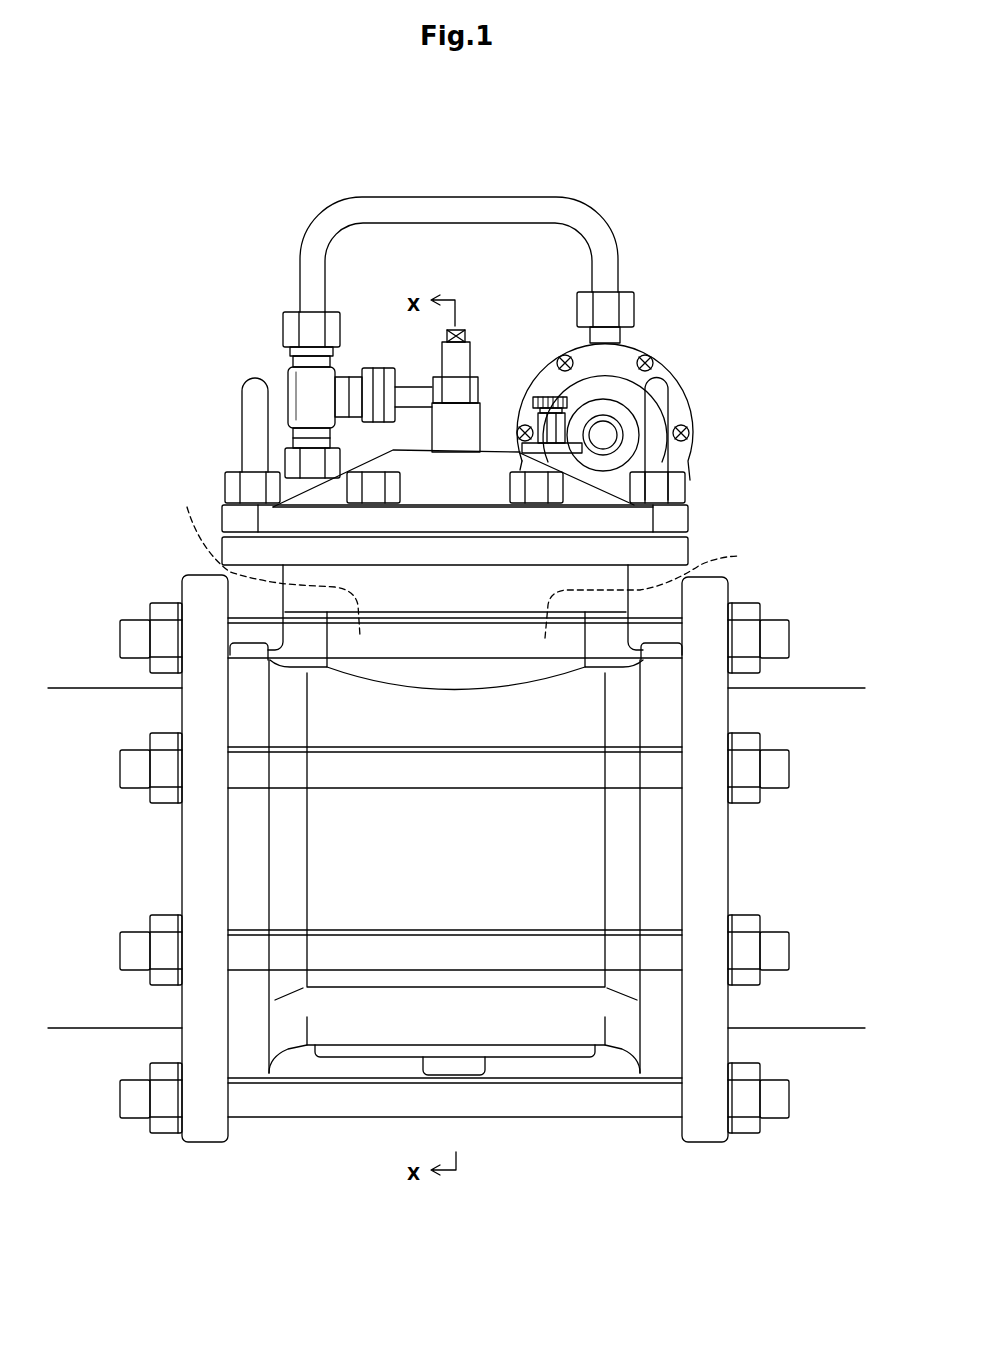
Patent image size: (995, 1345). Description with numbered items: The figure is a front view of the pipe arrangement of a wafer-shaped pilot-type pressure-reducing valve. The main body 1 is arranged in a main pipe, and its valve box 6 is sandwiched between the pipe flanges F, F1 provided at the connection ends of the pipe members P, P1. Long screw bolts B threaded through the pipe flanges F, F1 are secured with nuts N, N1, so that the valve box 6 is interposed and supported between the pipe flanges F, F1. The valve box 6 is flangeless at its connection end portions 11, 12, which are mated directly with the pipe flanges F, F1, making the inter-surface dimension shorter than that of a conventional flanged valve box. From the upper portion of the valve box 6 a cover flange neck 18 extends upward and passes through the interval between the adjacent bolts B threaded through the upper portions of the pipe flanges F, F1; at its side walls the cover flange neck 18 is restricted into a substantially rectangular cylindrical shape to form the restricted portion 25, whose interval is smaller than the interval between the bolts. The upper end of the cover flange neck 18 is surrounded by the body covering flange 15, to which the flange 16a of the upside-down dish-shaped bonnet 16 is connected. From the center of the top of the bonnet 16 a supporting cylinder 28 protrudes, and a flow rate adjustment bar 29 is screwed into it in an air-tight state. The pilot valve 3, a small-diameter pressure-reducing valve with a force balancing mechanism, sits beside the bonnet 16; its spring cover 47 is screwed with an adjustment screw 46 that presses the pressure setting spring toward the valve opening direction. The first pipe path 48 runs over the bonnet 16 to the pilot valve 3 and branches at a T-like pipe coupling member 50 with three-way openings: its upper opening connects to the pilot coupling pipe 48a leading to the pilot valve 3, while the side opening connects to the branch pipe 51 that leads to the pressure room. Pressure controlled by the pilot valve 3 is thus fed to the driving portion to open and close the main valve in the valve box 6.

The main body 1 is at (378, 1034).
The pilot valve 3 is at (665, 362).
The valve box 6 is at (535, 1032).
The connection end portion 11 is at (248, 1067).
The connection end portion 12 is at (664, 1067).
The body covering flange 15 is at (723, 582).
The bonnet 16 is at (488, 462).
The flange 16a is at (647, 524).
The cover flange neck 18 is at (680, 553).
The restricted portion 25 is at (456, 586).
The supporting cylinder 28 is at (470, 405).
The flow rate adjustment bar 29 is at (465, 335).
The adjustment screw 46 is at (618, 438).
The spring cover 47 is at (612, 373).
The first pipe path 48 is at (313, 250).
The pilot coupling pipe 48a is at (430, 210).
The pipe coupling member 50 is at (300, 395).
The branch pipe 51 is at (410, 387).
The bolt B is at (250, 653).
The pipe flange F is at (200, 580).
The pipe flange F1 is at (750, 602).
The nut N is at (163, 612).
The nut N1 is at (760, 612).
The pipe member P is at (75, 700).
The pipe member P1 is at (830, 702).